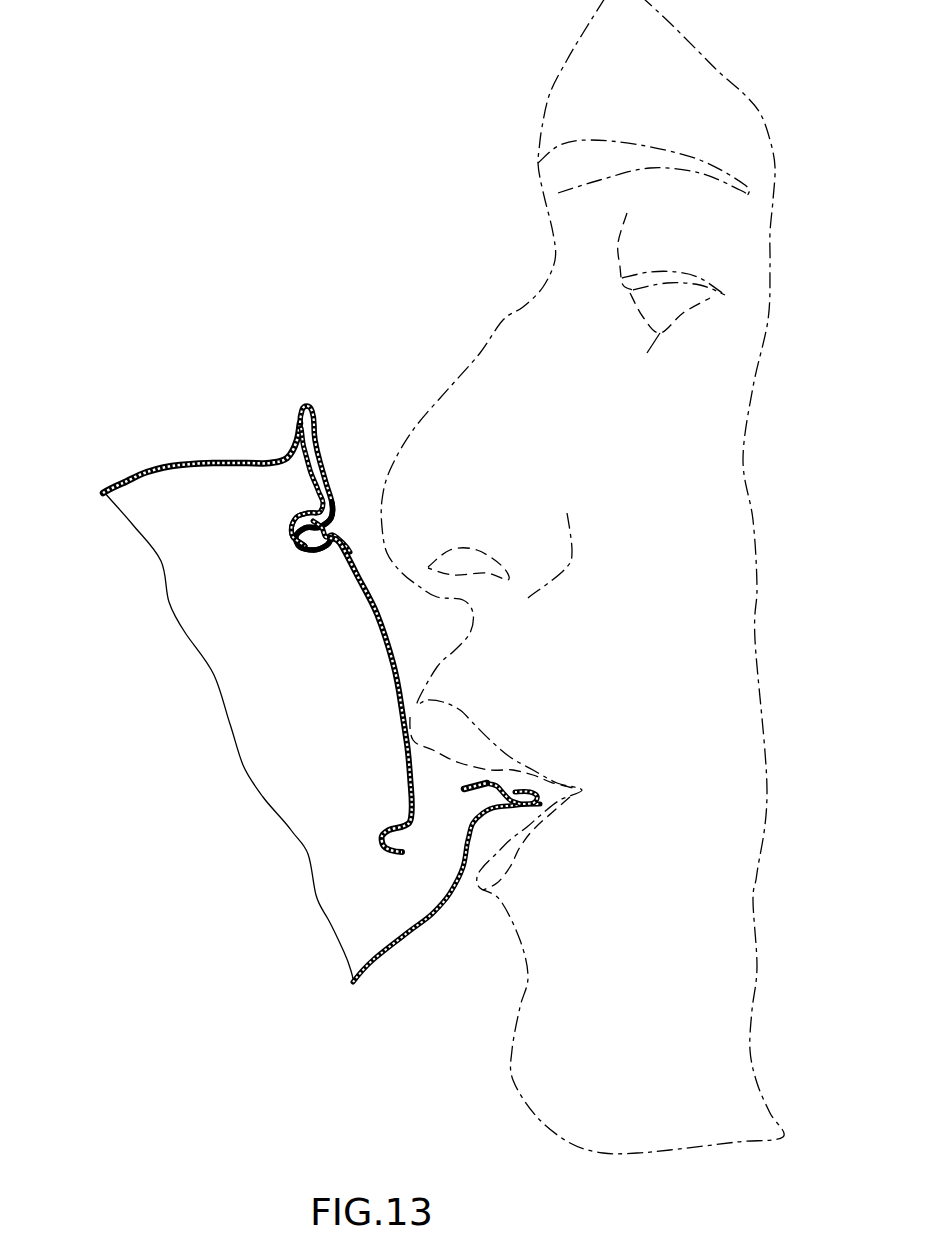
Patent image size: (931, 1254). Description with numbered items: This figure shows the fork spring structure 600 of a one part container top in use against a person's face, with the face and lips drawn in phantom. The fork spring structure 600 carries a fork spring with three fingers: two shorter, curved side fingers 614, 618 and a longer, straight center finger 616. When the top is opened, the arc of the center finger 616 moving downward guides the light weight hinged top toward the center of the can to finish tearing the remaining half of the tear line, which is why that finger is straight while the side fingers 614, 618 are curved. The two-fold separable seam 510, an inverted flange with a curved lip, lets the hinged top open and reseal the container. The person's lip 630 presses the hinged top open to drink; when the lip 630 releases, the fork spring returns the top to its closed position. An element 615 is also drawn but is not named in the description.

The fork spring structure 600 is at (190, 157).
The two-fold separable seam 510 is at (323, 477).
The side finger 614 is at (245, 517).
The side finger 618 is at (266, 515).
The center finger 616 is at (293, 543).
The strap 615 is at (395, 700).
The lip 630 is at (455, 718).